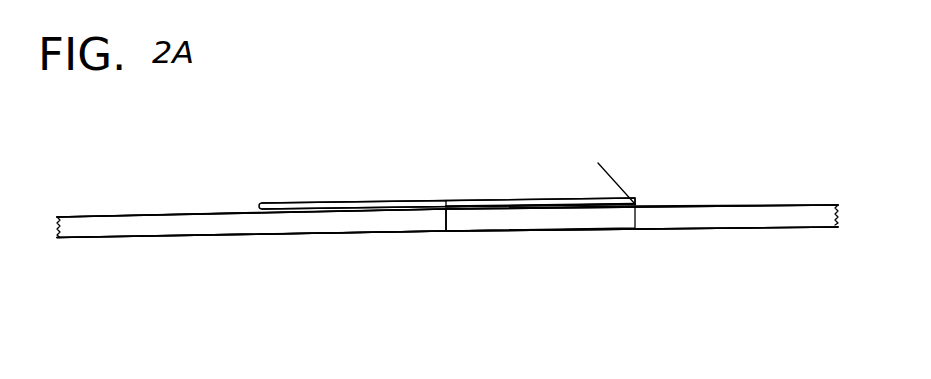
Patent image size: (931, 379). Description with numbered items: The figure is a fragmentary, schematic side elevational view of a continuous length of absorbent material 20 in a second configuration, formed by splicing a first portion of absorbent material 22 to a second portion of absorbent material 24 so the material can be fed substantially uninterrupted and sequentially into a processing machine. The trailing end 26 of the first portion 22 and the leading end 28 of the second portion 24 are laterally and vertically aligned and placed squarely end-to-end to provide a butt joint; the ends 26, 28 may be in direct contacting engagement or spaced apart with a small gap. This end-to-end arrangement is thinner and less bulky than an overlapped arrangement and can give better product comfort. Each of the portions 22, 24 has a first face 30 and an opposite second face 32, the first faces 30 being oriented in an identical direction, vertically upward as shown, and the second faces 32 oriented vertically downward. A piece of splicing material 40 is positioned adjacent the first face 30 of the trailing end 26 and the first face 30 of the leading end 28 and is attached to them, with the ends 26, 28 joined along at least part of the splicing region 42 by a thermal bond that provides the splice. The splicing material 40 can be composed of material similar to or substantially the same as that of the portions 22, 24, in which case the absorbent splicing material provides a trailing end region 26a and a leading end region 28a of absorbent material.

The continuous length of absorbent material 20 is at (479, 190).
The first portion of absorbent material 22 is at (138, 213).
The second portion of absorbent material 24 is at (760, 200).
The trailing end 26 is at (368, 235).
The leading end 28 is at (525, 230).
The trailing end region of absorbent material 26a is at (532, 197).
The leading end region of absorbent material 28a is at (293, 202).
The first face 30 is at (218, 212).
The second face 32 is at (210, 238).
The piece of splicing material 40 is at (375, 198).
The splicing region 42 is at (598, 163).